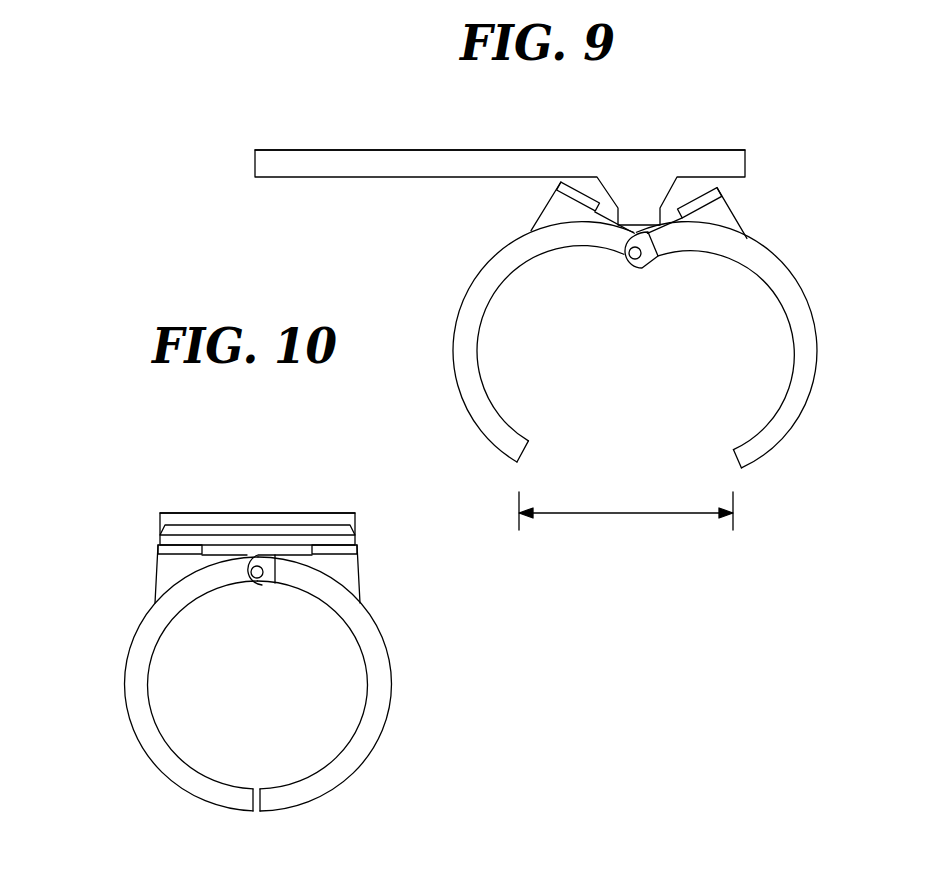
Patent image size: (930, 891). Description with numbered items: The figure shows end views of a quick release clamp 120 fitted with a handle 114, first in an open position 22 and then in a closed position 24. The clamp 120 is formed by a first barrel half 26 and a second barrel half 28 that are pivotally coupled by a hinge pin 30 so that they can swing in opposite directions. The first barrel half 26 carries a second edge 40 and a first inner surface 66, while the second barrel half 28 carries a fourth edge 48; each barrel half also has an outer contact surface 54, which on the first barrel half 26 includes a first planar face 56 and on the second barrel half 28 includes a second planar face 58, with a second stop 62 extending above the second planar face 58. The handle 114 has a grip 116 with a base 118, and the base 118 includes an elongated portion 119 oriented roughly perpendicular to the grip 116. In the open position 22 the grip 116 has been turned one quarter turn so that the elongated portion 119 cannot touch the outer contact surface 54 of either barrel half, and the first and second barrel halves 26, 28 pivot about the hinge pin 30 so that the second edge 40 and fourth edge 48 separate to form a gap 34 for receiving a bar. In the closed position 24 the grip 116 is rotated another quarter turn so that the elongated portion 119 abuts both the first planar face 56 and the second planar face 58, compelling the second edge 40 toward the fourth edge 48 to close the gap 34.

In FIG. 9, the open position 22 is at (291, 82).
In FIG. 10, the closed position 24 is at (59, 519).
In FIG. 9, the first barrel half 26 is at (741, 322).
In FIG. 10, the first barrel half 26 is at (320, 678).
In FIG. 9, the second barrel half 28 is at (525, 315).
In FIG. 10, the second barrel half 28 is at (191, 678).
In FIG. 9, the hinge pin 30 is at (641, 259).
In FIG. 10, the hinge pin 30 is at (257, 572).
In FIG. 9, the gap 34 is at (597, 512).
In FIG. 9, the second edge 40 is at (737, 459).
In FIG. 9, the fourth edge 48 is at (522, 451).
In FIG. 9, the outer contact surface 54 is at (549, 187).
In FIG. 10, the outer contact surface 54 is at (257, 574).
In FIG. 9, the first planar face 56 is at (664, 225).
In FIG. 9, the second planar face 58 is at (615, 222).
In FIG. 9, the second stop 62 is at (578, 196).
In FIG. 9, the first inner surface 66 is at (699, 203).
In FIG. 9, the handle 114 is at (398, 150).
In FIG. 10, the handle 114 is at (330, 513).
In FIG. 9, the grip 116 is at (300, 150).
In FIG. 10, the grip 116 is at (185, 513).
In FIG. 9, the base 118 is at (733, 332).
In FIG. 9, the elongated portion 119 is at (641, 250).
In FIG. 10, the elongated portion 119 is at (261, 570).
In FIG. 9, the clamp 120 is at (790, 560).
In FIG. 10, the clamp 120 is at (450, 790).